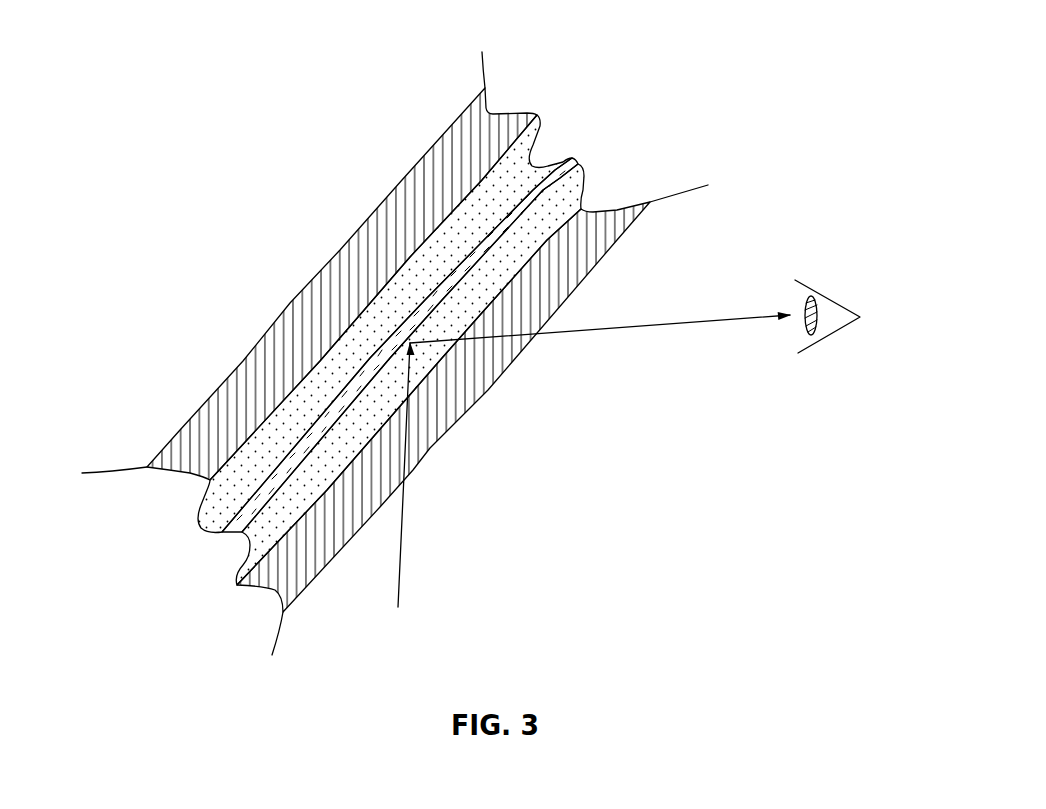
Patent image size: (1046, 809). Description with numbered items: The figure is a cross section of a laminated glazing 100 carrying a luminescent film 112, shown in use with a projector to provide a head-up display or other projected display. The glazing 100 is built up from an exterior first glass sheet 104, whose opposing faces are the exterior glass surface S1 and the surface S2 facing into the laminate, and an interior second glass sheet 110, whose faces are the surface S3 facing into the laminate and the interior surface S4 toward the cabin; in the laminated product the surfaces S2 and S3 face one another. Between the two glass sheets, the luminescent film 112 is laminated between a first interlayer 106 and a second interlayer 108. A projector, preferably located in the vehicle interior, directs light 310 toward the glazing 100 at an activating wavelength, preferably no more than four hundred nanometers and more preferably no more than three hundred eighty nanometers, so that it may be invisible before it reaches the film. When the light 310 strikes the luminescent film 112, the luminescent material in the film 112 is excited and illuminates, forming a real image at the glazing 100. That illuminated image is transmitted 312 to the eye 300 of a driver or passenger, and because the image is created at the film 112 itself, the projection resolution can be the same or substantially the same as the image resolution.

The laminated glazing 100 is at (180, 173).
The exterior first glass sheet 104 is at (252, 405).
The first interlayer 106 is at (508, 172).
The second interlayer 108 is at (243, 553).
The interior second glass sheet 110 is at (288, 573).
The luminescent film 112 is at (447, 283).
The eye 300 is at (832, 297).
The light 310 is at (405, 508).
The illuminated image transmitted 312 is at (668, 325).
The exterior glass surface S1 is at (463, 114).
The glass substrate surface opposite S1 S2 is at (475, 183).
The glass substrate surface opposite S4 S3 is at (582, 240).
The interior glass substrate surface S4 is at (547, 243).